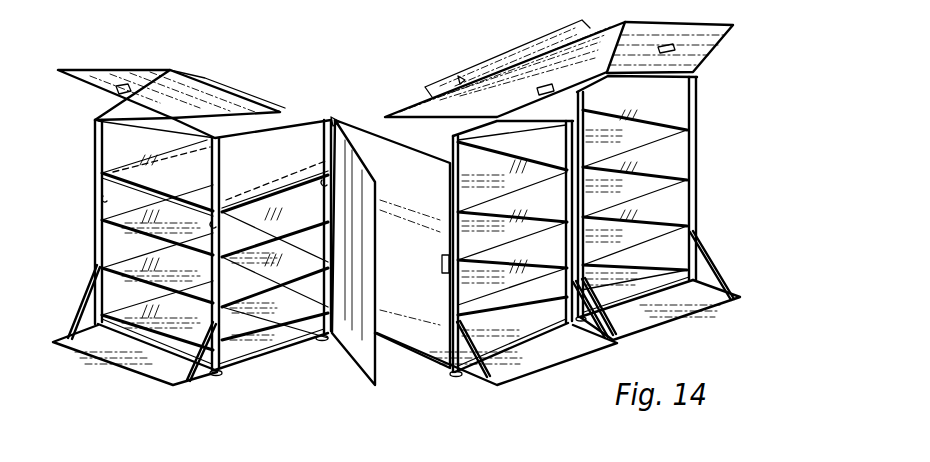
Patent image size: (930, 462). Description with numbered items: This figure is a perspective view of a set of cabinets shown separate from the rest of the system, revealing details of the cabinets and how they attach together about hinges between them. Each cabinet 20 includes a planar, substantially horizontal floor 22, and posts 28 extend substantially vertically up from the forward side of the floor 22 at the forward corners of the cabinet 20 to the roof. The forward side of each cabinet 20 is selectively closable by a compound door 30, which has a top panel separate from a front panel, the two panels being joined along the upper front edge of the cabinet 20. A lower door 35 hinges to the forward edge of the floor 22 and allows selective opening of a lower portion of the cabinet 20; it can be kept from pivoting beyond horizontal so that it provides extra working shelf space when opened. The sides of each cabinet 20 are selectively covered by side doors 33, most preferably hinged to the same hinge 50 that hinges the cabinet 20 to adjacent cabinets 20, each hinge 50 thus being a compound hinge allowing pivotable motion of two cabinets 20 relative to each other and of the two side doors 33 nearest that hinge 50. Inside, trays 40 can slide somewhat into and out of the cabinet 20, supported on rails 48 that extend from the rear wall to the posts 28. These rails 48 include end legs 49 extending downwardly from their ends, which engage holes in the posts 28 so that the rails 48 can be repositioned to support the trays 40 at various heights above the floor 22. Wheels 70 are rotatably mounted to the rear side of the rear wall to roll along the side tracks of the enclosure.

The cabinet 20 is at (253, 92).
The floor 22 is at (193, 340).
The post 28 is at (95, 263).
The compound door 30 is at (147, 82).
The side door 33 is at (358, 258).
The lower door 35 is at (140, 367).
The tray 40 is at (630, 137).
The rail 48 is at (128, 157).
The end leg 49 is at (104, 200).
The hinge 50 is at (335, 120).
The wheel 70 is at (215, 376).